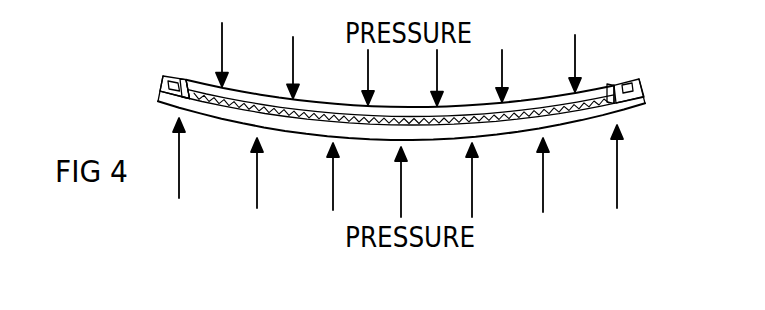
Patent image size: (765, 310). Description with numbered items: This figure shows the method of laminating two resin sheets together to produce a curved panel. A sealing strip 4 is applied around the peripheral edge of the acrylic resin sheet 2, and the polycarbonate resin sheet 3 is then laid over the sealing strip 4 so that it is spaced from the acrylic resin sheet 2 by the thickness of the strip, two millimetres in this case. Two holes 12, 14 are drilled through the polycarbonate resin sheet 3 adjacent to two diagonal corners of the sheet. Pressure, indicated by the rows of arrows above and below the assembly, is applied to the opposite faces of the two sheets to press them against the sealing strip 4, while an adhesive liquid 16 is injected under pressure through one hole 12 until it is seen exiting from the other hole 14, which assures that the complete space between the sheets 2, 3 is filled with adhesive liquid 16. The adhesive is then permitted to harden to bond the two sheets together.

The acrylic resin sheet 2 is at (157, 102).
The polycarbonate resin sheet 3 is at (203, 82).
The sealing strip 4 is at (163, 84).
The hole 12 is at (611, 83).
The hole 14 is at (187, 83).
The adhesive liquid 16 is at (243, 99).